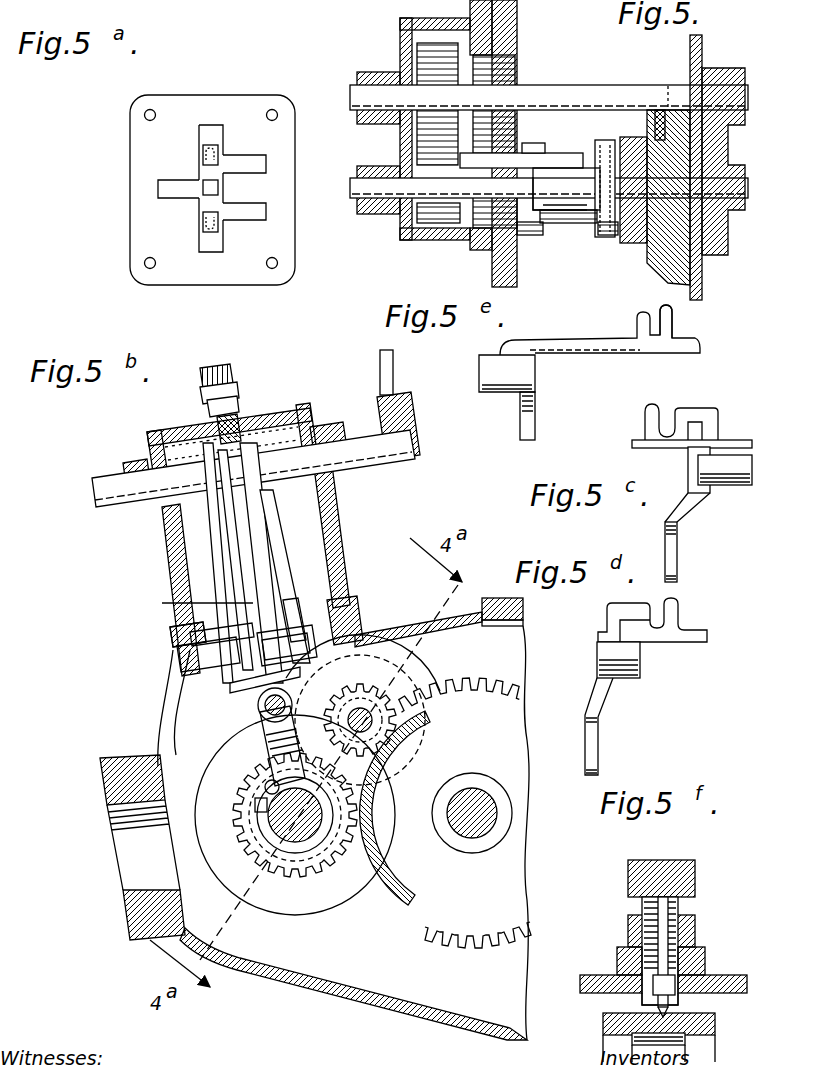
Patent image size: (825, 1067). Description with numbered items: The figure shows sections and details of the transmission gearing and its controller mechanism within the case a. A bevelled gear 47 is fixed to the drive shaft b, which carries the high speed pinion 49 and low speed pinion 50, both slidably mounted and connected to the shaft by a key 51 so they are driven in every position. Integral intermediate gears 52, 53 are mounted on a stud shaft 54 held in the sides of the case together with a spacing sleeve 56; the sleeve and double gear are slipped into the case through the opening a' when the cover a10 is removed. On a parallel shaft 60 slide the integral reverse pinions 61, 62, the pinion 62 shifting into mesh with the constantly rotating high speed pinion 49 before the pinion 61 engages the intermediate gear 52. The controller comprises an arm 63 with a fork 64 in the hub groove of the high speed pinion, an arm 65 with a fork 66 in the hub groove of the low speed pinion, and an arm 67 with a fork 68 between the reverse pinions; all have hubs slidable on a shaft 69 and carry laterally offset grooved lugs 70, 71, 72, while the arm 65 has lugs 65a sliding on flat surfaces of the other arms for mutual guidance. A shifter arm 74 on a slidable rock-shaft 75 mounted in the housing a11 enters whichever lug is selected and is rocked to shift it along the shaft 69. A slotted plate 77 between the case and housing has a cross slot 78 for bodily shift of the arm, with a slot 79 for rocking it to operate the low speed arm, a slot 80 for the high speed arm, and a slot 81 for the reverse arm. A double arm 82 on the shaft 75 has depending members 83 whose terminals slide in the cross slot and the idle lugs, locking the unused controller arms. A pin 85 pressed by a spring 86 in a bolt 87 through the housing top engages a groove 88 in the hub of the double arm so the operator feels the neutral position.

In FIG. 5, the bevelled gear 47 is at (660, 100).
In FIG. 5, the high speed pinion 49 is at (480, 225).
In FIG. 5B, the high speed pinion 49 is at (292, 870).
In FIG. 5, the low speed pinion 50 is at (640, 246).
In FIG. 5B, the low speed pinion 50 is at (312, 860).
In FIG. 5B, the key 51 is at (268, 822).
In FIG. 5B, the intermediate gear 52 is at (396, 892).
In FIG. 5B, the intermediate gear 53 is at (452, 948).
In FIG. 5B, the stud shaft 54 is at (475, 794).
In FIG. 5B, the spacing sleeve 56 is at (472, 854).
In FIG. 5, the shaft 60 is at (570, 90).
In FIG. 5B, the shaft 60 is at (388, 716).
In FIG. 5, the reverse pinion 61 is at (470, 40).
In FIG. 5B, the reverse pinion 61 is at (372, 706).
In FIG. 5, the reverse pinion 62 is at (430, 60).
In FIG. 5B, the reverse pinion 62 is at (382, 690).
In FIG. 5D, the arm 63 is at (605, 685).
In FIG. 5, the fork 64 is at (528, 236).
In FIG. 5D, the fork 64 is at (598, 742).
In FIG. 5C, the arm 65 is at (680, 500).
In FIG. 5B, the arm 65 is at (262, 746).
In FIG. 5, the lugs 65a is at (565, 222).
In FIG. 5C, the lugs 65a is at (712, 452).
In FIG. 5B, the lugs 65a is at (373, 624).
In FIG. 5, the fork 66 is at (607, 236).
In FIG. 5C, the fork 66 is at (677, 564).
In FIG. 5B, the fork 66 is at (265, 786).
In FIG. 5, the arm 67 is at (530, 163).
In FIG. 5E, the arm 67 is at (565, 355).
In FIG. 5, the fork 68 is at (500, 112).
In FIG. 5E, the fork 68 is at (531, 426).
In FIG. 5B, the fork 68 is at (345, 720).
In FIG. 5, the shaft 69 is at (386, 200).
In FIG. 5B, the shaft 69 is at (258, 708).
In FIG. 5, the grooved lug 70 is at (590, 214).
In FIG. 5D, the grooved lug 70 is at (686, 611).
In FIG. 5B, the grooved lug 70 is at (190, 640).
In FIG. 5, the grooved lug 71 is at (576, 188).
In FIG. 5C, the grooved lug 71 is at (645, 426).
In FIG. 5B, the grooved lug 71 is at (282, 600).
In FIG. 5, the grooved lug 72 is at (602, 156).
In FIG. 5E, the grooved lug 72 is at (674, 320).
In FIG. 5B, the grooved lug 72 is at (308, 648).
In FIG. 5A, the shifter arm 74 is at (205, 193).
In FIG. 5F, the shifter arm 74 is at (632, 1040).
In FIG. 5B, the shifter arm 74 is at (164, 604).
In FIG. 5B, the rock-shaft 75 is at (345, 442).
In FIG. 5A, the slotted plate 77 is at (148, 163).
In FIG. 5B, the slotted plate 77 is at (350, 635).
In FIG. 5A, the cross slot 78 is at (205, 248).
In FIG. 5B, the cross slot 78 is at (305, 618).
In FIG. 5A, the slot 79 is at (165, 190).
In FIG. 5B, the slot 79 is at (262, 652).
In FIG. 5A, the slot 80 is at (258, 212).
In FIG. 5A, the slot 81 is at (260, 165).
In FIG. 5F, the double arm 82 is at (715, 1026).
In FIG. 5B, the double arm 82 is at (272, 555).
In FIG. 5A, the depending members 83 is at (218, 152).
In FIG. 5B, the depending members 83 is at (205, 660).
In FIG. 5F, the pin 85 is at (655, 1011).
In FIG. 5B, the pin 85 is at (240, 418).
In FIG. 5F, the spring 86 is at (640, 929).
In FIG. 5F, the bolt 87 is at (628, 884).
In FIG. 5B, the bolt 87 is at (232, 376).
In FIG. 5F, the groove 88 is at (690, 1013).
In FIG. 5B, the groove 88 is at (218, 438).
In FIG. 5, the case a is at (717, 167).
In FIG. 5B, the case a is at (353, 984).
In FIG. 5B, the opening a' is at (502, 639).
In FIG. 5B, the cover a10 is at (523, 609).
In FIG. 5F, the housing a11 is at (715, 973).
In FIG. 5B, the housing a11 is at (328, 500).
In FIG. 5B, the drive shaft b is at (256, 805).